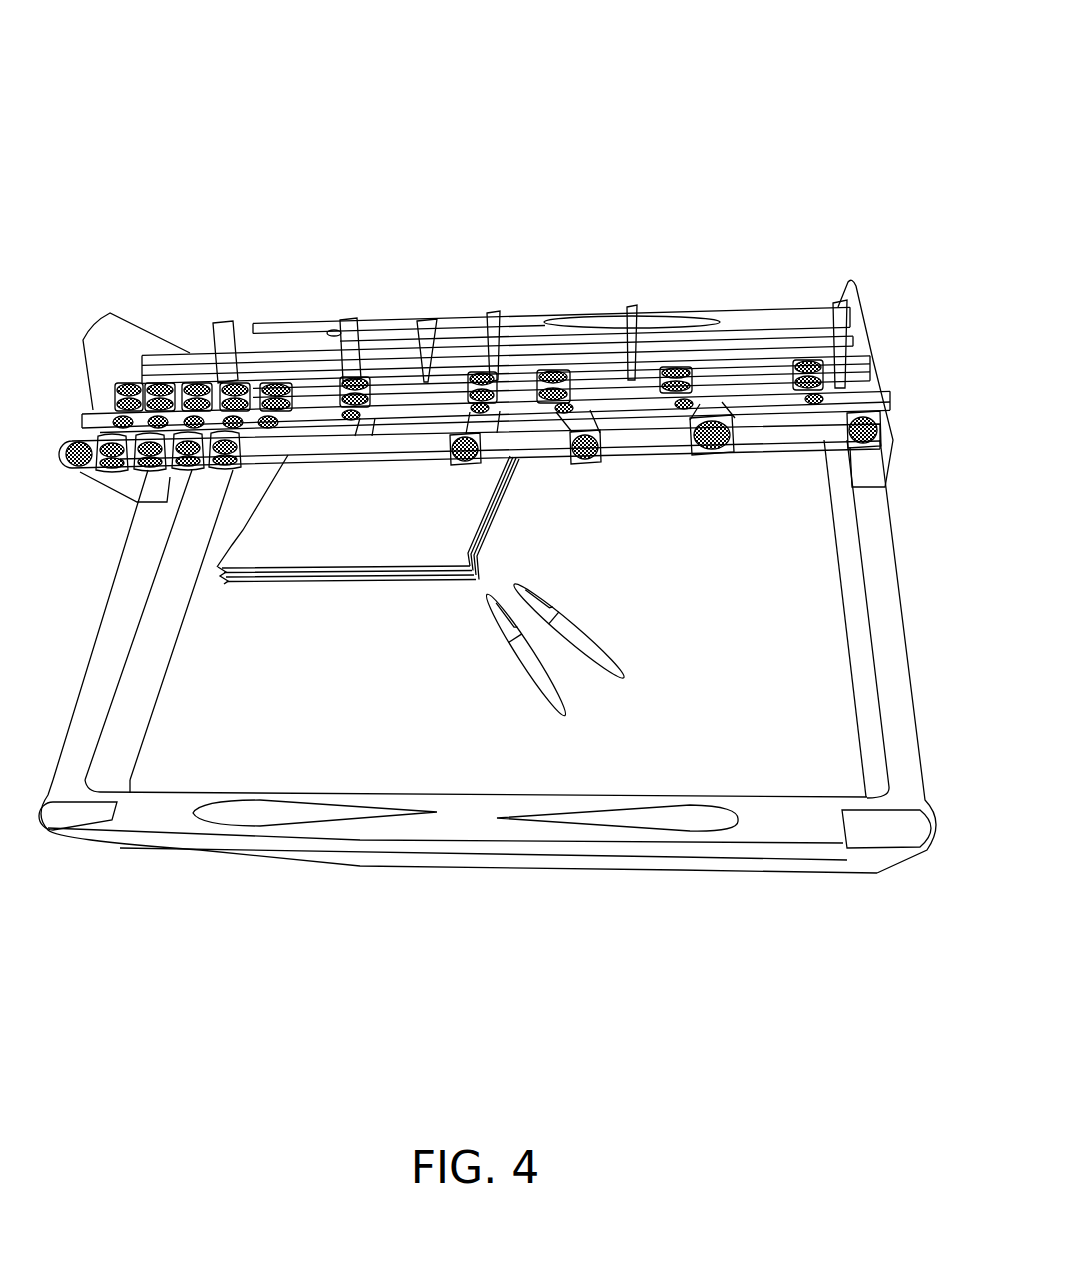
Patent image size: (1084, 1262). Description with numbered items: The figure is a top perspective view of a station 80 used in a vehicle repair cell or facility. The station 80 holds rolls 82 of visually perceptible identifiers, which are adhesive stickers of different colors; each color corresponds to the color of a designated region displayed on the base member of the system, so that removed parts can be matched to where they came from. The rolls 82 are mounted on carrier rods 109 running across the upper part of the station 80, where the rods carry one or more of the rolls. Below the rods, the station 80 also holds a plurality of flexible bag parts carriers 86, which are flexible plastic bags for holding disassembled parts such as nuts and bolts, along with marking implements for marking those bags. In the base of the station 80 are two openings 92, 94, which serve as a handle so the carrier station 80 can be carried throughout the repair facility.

The station 80 is at (692, 152).
The rolls 82 is at (165, 380).
The flexible bag parts carriers 86 is at (265, 558).
The carrier rods 109 is at (400, 398).
The opening 92 is at (305, 812).
The opening 94 is at (610, 825).